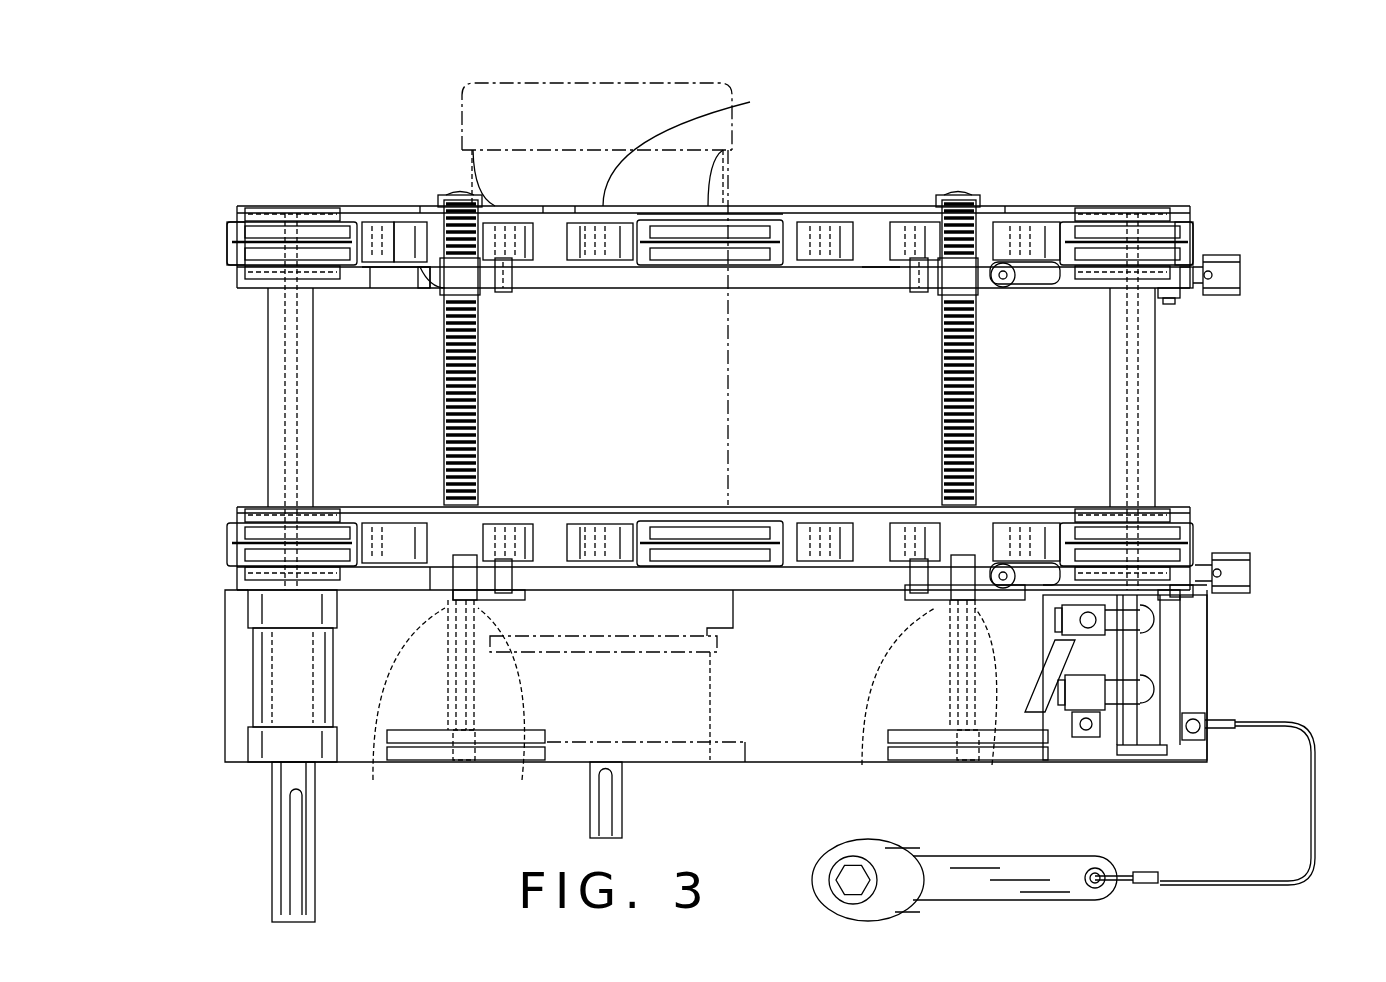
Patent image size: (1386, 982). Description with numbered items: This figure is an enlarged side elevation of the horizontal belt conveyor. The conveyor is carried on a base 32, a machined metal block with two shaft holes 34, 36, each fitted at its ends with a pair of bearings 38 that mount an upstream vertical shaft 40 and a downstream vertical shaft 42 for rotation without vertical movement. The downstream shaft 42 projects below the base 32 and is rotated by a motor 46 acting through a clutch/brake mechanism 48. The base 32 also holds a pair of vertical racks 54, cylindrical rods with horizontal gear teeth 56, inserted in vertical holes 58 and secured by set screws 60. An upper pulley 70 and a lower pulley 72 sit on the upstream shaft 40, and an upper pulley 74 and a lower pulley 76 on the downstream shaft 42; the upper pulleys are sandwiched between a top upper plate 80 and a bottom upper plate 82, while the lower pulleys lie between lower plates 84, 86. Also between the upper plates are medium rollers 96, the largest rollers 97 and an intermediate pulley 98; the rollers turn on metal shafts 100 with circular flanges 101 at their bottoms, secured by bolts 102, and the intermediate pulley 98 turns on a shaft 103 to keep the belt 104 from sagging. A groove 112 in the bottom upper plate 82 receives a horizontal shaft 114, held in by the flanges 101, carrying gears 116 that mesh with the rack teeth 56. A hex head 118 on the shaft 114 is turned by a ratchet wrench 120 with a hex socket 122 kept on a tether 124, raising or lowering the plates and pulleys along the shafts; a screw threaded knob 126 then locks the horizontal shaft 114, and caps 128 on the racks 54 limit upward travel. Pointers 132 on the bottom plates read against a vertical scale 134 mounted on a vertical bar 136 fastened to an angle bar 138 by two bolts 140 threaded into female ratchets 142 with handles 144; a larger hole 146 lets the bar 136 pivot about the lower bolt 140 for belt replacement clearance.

The base 32 is at (225, 688).
The shaft hole 34 is at (262, 650).
The shaft hole 36 is at (1207, 668).
The bearings 38 is at (262, 608).
The upstream vertical shaft 40 is at (1155, 402).
The downstream vertical shaft 42 is at (268, 396).
The motor 46 is at (728, 392).
The clutch/brake mechanism 48 is at (688, 690).
The vertical racks 54 is at (444, 376).
The gear teeth 56 is at (478, 380).
The vertical holes 58 is at (440, 762).
The set screws 60 is at (679, 702).
The upper pulley 70 is at (1180, 225).
The lower pulley 72 is at (1180, 530).
The upper pulley 74 is at (240, 222).
The lower pulley 76 is at (245, 538).
The top upper plate 80 is at (385, 206).
The bottom upper plate 82 is at (362, 280).
The lower plate 84 is at (248, 507).
The lower plate 86 is at (250, 582).
The medium rollers 96 is at (543, 206).
The largest rollers 97 is at (420, 206).
The intermediate pulley 98 is at (752, 220).
The metal shafts 100 is at (345, 222).
The circular flanges 101 is at (350, 270).
The bolts 102 is at (1062, 164).
The shaft 103 is at (782, 214).
The belt 104 is at (227, 246).
The groove 112 is at (392, 290).
The horizontal shaft 114 is at (1195, 290).
The gears 116 is at (495, 293).
The hex head 118 is at (1240, 286).
The ratchet wrench 120 is at (985, 858).
The hex socket 122 is at (855, 868).
The tether 124 is at (1315, 862).
The screw threaded knob 126 is at (1015, 282).
The caps 128 is at (448, 195).
The pointers 132 is at (1170, 298).
The vertical scale 134 is at (1140, 452).
The vertical bar 136 is at (1170, 752).
The angle bar 138 is at (1105, 748).
The bolts 140 is at (1170, 622).
The female ratchets 142 is at (1062, 612).
The handles 144 is at (1058, 662).
The larger hole 146 is at (1105, 632).